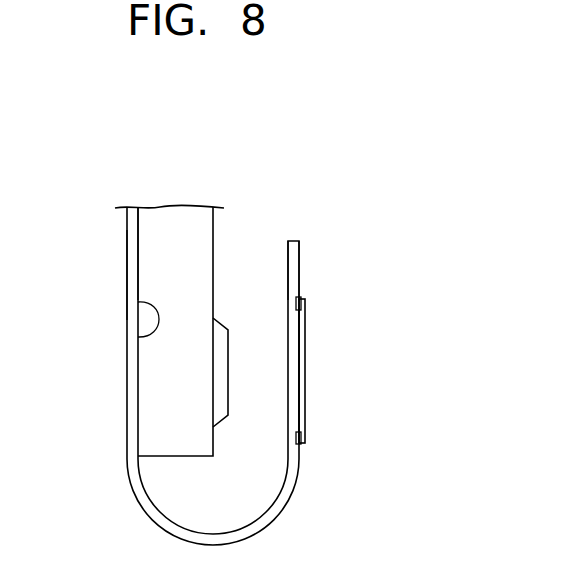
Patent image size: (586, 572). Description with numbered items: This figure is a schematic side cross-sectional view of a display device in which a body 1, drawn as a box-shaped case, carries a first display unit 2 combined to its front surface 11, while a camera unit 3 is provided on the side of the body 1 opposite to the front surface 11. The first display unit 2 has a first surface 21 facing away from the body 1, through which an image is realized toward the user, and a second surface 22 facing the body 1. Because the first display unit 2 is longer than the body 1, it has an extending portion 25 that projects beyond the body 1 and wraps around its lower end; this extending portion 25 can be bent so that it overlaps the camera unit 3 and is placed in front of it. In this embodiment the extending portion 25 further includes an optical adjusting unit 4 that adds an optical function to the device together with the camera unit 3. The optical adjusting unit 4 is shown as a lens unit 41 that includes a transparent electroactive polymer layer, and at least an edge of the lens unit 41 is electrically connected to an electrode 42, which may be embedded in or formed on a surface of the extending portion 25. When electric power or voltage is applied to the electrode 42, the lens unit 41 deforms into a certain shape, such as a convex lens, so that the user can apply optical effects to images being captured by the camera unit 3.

The body 1 is at (197, 221).
The first display unit 2 is at (131, 214).
The camera unit 3 is at (223, 372).
The optical adjusting unit 4 is at (309, 299).
The front surface 11 is at (139, 243).
The first surface 21 is at (127, 276).
The second surface 22 is at (139, 338).
The extending portion 25 is at (293, 240).
The lens unit 41 is at (307, 370).
The electrode 42 is at (297, 303).